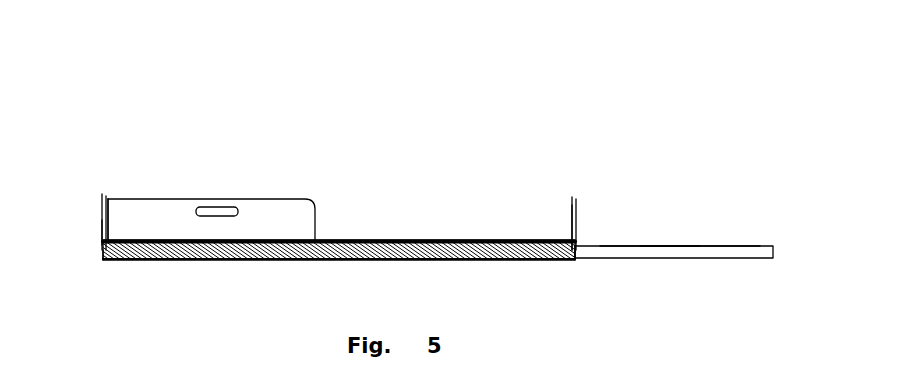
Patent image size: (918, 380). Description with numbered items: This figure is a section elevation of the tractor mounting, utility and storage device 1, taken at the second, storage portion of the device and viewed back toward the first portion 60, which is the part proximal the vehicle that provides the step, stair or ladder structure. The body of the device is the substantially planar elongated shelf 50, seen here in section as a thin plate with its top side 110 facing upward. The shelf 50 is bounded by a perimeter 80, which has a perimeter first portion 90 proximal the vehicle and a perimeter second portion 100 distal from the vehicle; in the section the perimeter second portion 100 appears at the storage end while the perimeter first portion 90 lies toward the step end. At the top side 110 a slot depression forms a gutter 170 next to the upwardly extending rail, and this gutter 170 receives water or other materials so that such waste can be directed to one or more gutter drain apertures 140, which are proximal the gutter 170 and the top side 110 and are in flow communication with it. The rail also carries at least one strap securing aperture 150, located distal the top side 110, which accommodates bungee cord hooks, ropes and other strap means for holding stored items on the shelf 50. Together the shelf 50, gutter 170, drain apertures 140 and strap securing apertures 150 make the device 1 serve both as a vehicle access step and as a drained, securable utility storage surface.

The tractor mounting, utility and storage device 1 is at (317, 133).
The substantially planar elongated shelf 50 is at (736, 246).
The first portion 60 is at (668, 246).
The perimeter 80 is at (103, 232).
The perimeter first portion 90 is at (713, 256).
The perimeter second portion 100 is at (298, 212).
The top side 110 is at (680, 246).
The gutter drain aperture 140 is at (107, 252).
The strap securing aperture 150 is at (104, 196).
The gutter 170 is at (108, 198).